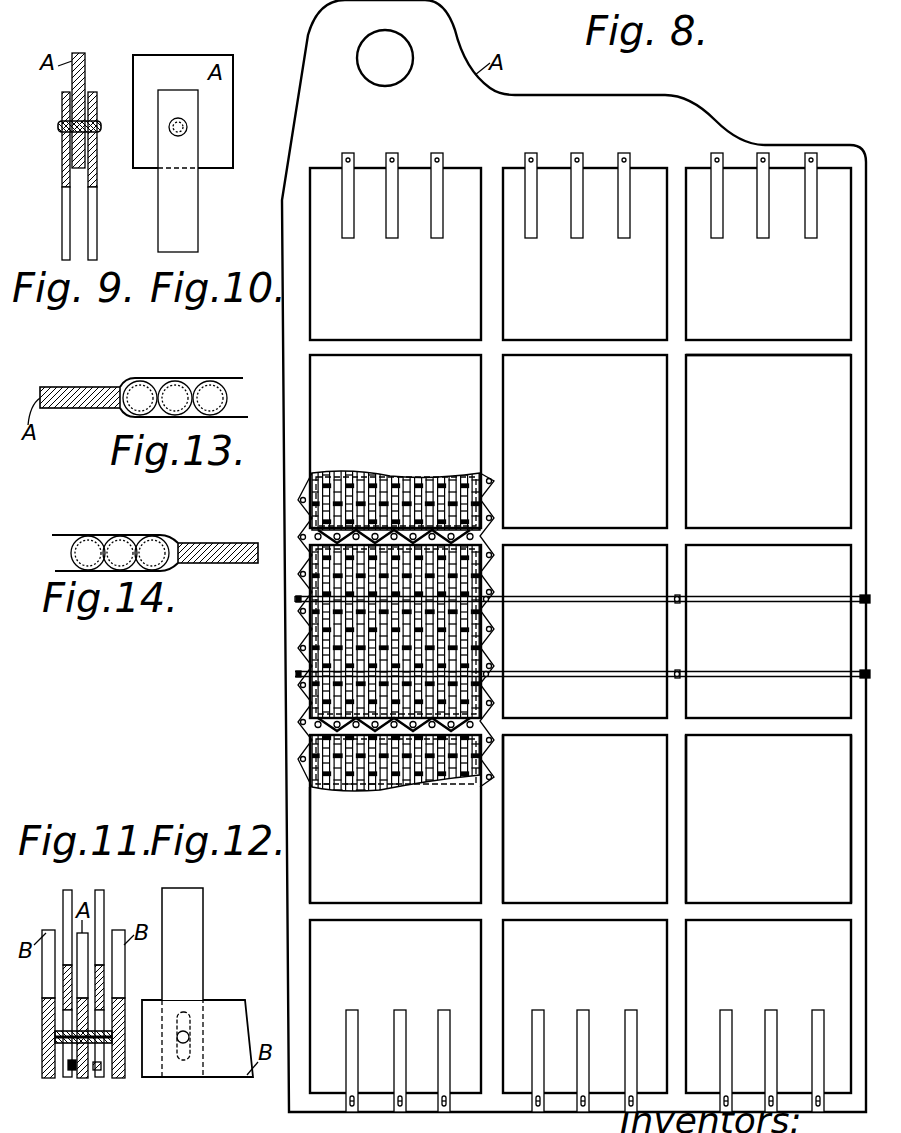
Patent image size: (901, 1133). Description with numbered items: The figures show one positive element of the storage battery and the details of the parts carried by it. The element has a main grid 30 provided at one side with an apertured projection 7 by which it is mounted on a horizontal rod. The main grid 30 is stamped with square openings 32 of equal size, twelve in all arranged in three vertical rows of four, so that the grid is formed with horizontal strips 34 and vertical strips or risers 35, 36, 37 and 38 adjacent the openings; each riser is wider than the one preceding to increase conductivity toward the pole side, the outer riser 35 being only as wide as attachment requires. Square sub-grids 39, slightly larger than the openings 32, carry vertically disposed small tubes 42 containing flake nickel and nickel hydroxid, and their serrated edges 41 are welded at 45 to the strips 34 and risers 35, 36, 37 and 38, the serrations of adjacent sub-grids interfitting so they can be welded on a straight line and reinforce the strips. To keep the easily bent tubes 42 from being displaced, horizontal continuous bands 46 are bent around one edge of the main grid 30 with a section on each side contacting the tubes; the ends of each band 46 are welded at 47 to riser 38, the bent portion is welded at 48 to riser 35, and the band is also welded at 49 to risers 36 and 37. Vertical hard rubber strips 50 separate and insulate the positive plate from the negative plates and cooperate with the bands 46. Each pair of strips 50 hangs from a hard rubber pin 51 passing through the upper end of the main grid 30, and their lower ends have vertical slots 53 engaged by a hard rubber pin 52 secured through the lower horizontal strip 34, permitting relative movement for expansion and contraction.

In FIG. 8, the apertured projection 7 is at (451, 36).
In FIG. 8, the main grid 30 is at (574, 556).
In FIG. 10, the main grid 30 is at (233, 150).
In FIG. 8, the openings 32 is at (580, 630).
In FIG. 8, the horizontal strips 34 is at (763, 343).
In FIG. 11, the horizontal strips 34 is at (46, 1080).
In FIG. 8, the vertical strip or riser 35 is at (855, 752).
In FIG. 8, the vertical strip or riser 36 is at (684, 810).
In FIG. 8, the vertical strip or riser 37 is at (502, 845).
In FIG. 8, the vertical strip or riser 38 is at (308, 845).
In FIG. 14, the vertical strip or riser 38 is at (192, 543).
In FIG. 8, the sub-grid 39 is at (480, 650).
In FIG. 8, the serrated edges 41 is at (394, 631).
In FIG. 13, the tubes 42 is at (222, 395).
In FIG. 14, the tubes 42 is at (72, 555).
In FIG. 8, the welds 45 is at (482, 538).
In FIG. 8, the strips or bands 46 is at (554, 639).
In FIG. 13, the strips or bands 46 is at (232, 378).
In FIG. 14, the strips or bands 46 is at (65, 535).
In FIG. 8, the weld 47 is at (296, 601).
In FIG. 13, the weld 47 is at (85, 387).
In FIG. 8, the weld 48 is at (862, 596).
In FIG. 14, the weld 48 is at (235, 543).
In FIG. 8, the welds 49 is at (486, 677).
In FIG. 8, the vertical hard rubber strips 50 is at (392, 230).
In FIG. 9, the vertical hard rubber strips 50 is at (92, 210).
In FIG. 10, the vertical hard rubber strips 50 is at (196, 205).
In FIG. 11, the vertical hard rubber strips 50 is at (98, 895).
In FIG. 12, the vertical hard rubber strips 50 is at (203, 910).
In FIG. 8, the hard rubber pin 51 is at (350, 160).
In FIG. 9, the hard rubber pin 51 is at (60, 127).
In FIG. 10, the hard rubber pin 51 is at (184, 122).
In FIG. 8, the hard rubber pin 52 is at (396, 1098).
In FIG. 11, the hard rubber pin 52 is at (100, 1020).
In FIG. 12, the hard rubber pin 52 is at (190, 1020).
In FIG. 8, the vertical slots 53 is at (397, 1103).
In FIG. 11, the vertical slots 53 is at (60, 1024).
In FIG. 12, the vertical slots 53 is at (189, 1039).